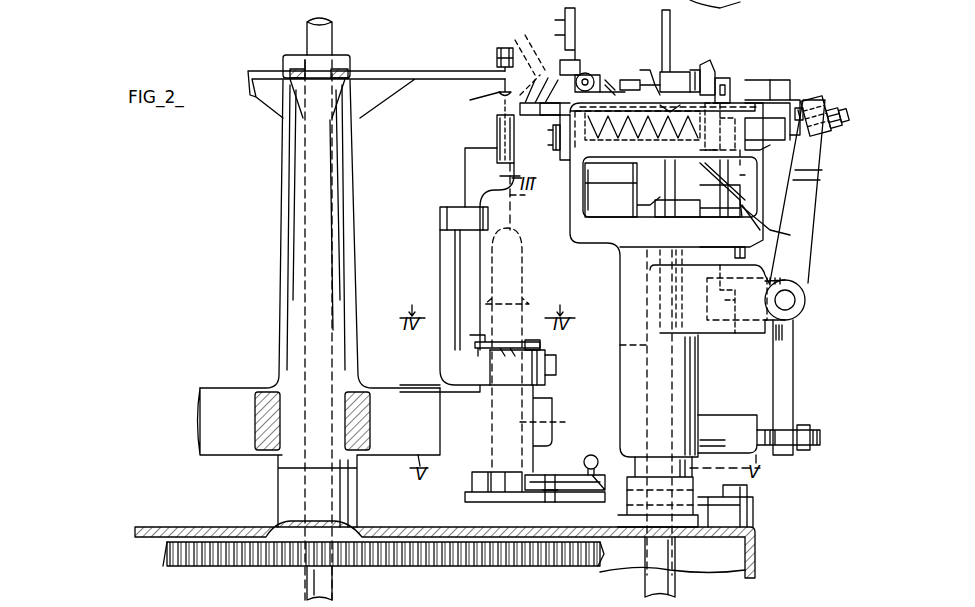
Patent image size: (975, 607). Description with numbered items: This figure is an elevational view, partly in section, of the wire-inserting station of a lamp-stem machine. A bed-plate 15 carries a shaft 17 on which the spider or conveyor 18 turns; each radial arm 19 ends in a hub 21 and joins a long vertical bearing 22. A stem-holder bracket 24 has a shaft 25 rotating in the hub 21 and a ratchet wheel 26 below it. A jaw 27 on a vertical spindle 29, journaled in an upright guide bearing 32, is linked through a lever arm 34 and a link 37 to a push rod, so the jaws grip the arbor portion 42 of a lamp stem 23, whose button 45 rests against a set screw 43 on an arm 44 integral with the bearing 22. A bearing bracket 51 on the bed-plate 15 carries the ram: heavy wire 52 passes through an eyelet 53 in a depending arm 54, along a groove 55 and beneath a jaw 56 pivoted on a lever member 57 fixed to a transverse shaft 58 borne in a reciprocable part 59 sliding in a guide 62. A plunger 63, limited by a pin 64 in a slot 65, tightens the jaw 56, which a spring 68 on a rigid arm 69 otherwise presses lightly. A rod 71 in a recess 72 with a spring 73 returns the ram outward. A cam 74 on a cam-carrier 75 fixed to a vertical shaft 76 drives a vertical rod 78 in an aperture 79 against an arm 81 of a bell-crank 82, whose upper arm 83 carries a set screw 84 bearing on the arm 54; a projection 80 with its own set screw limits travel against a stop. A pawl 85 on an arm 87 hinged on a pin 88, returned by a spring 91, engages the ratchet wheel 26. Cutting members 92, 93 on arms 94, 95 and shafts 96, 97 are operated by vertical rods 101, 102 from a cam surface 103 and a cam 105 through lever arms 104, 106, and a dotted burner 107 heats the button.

The bed-plate 15 is at (758, 558).
The shaft 17 is at (333, 36).
The spider or conveyor 18 is at (372, 380).
The radial arm 19 is at (362, 458).
The hub 21 is at (548, 452).
The vertical bearing 22 is at (290, 216).
The incandescent lamp stem 23 is at (522, 248).
The bracket 24 is at (440, 354).
The shaft 25 is at (557, 421).
The ratchet wheel 26 is at (473, 498).
The oscillatory jaw 27 is at (497, 128).
The vertical spindle 29 is at (460, 258).
The upright guide bearing 32 is at (440, 220).
The lever arm 34 is at (483, 338).
The link 37 is at (523, 362).
The arbor portion 42 is at (528, 196).
The set screw 43 is at (500, 92).
The arm 44 is at (345, 70).
The button 45 is at (498, 98).
The bearing bracket 51 is at (620, 280).
The wire 52 is at (812, 98).
The eyelet 53 is at (797, 100).
The depending arm 54 is at (818, 140).
The groove 55 is at (750, 78).
The jaw 56 is at (582, 72).
The lever member 57 is at (612, 78).
The transverse shaft 58 is at (630, 78).
The reciprocable part 59 is at (725, 76).
The guide 62 is at (765, 78).
The plunger 63 is at (775, 78).
The pin 64 is at (697, 68).
The slot 65 is at (672, 112).
The spring 68 is at (675, 51).
The rigid arm 69 is at (712, 60).
The rod 71 is at (770, 140).
The recess 72 is at (670, 187).
The spring 73 is at (636, 134).
The cam 74 is at (695, 265).
The cam-carrier 75 is at (697, 188).
The vertical shaft 76 is at (620, 350).
The vertical rod 78 is at (800, 220).
The vertical aperture 79 is at (805, 258).
The projection 80 is at (794, 375).
The arm 81 is at (738, 325).
The bell-crank 82 is at (806, 300).
The upper arm 83 is at (806, 280).
The set screw 84 is at (846, 108).
The pawl 85 is at (604, 498).
The arm 87 is at (556, 503).
The pin 88 is at (752, 495).
The spring 91 is at (597, 458).
The cutting member 92 is at (560, 163).
The cutting member 93 is at (576, 18).
The arm 94 is at (553, 135).
The arm 95 is at (540, 96).
The shaft 96 is at (650, 119).
The shaft 97 is at (723, 126).
The vertical rod 101 is at (745, 160).
The vertical rod 102 is at (712, 189).
The cam surface 103 is at (743, 180).
The lever arm 104 is at (740, 30).
The cam 105 is at (760, 228).
The lever arm 106 is at (645, 68).
The burner 107 is at (517, 54).